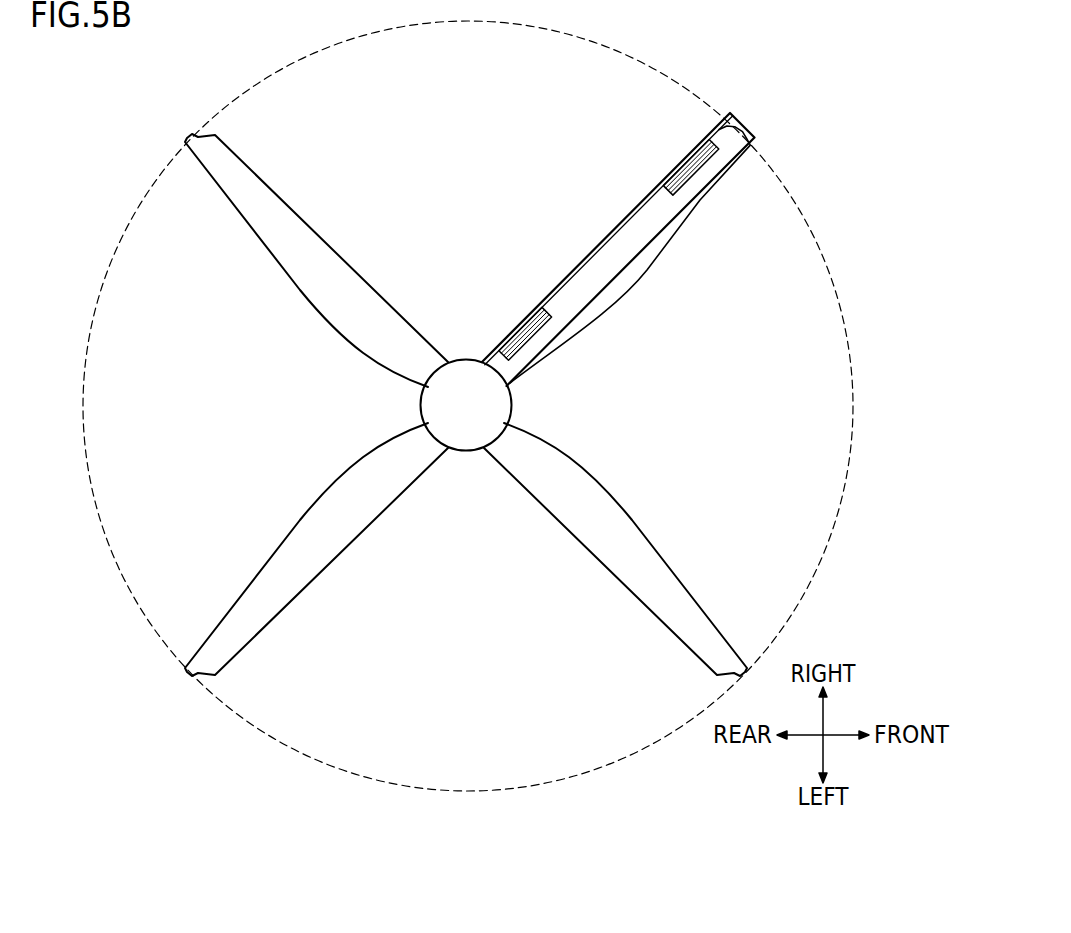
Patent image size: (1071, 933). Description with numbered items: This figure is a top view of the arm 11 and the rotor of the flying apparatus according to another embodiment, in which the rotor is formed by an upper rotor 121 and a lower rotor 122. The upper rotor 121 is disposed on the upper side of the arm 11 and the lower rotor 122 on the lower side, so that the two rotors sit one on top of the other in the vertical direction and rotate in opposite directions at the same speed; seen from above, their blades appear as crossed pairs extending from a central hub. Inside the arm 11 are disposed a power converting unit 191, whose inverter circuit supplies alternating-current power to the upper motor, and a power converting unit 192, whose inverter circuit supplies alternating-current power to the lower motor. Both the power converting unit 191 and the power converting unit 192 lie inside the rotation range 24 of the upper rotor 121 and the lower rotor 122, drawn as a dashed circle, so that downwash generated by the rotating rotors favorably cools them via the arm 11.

The arm 11 is at (762, 138).
The rotation range 24 is at (823, 563).
The upper rotor 121 is at (281, 535).
The lower rotor 122 is at (315, 229).
The power converting unit 191 is at (538, 334).
The power converting unit 192 is at (701, 172).